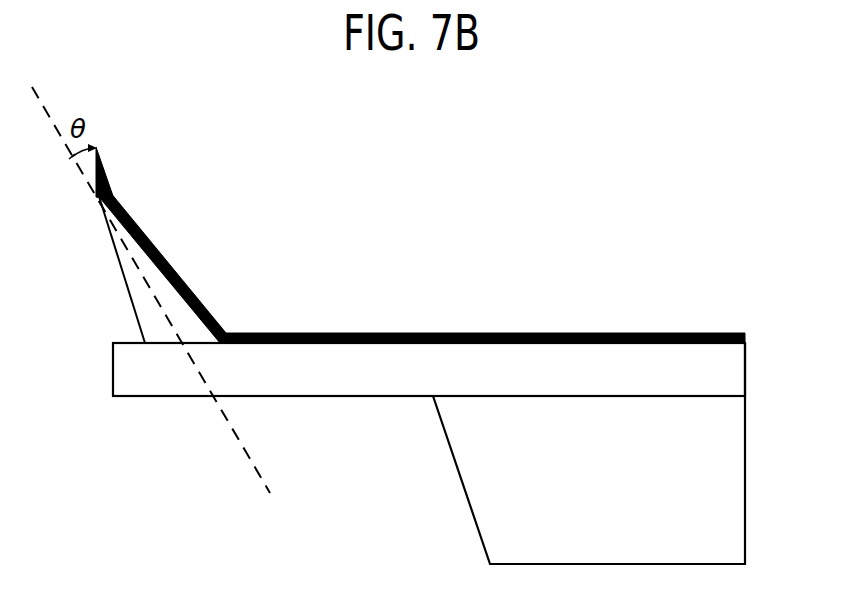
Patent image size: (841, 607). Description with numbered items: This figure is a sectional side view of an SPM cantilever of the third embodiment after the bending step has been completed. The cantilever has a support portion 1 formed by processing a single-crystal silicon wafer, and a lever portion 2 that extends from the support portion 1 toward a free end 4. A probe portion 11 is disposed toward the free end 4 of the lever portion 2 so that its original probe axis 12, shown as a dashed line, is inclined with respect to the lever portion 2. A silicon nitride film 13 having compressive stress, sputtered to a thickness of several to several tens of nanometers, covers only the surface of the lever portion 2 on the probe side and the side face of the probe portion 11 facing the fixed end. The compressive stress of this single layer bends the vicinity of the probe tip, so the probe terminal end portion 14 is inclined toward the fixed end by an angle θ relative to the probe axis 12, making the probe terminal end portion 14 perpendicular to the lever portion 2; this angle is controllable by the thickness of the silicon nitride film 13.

The support portion 1 is at (723, 485).
The lever portion 2 is at (333, 355).
The free end 4 is at (122, 372).
The probe portion 11 is at (127, 282).
The probe axis 12 is at (43, 104).
The silicon nitride film 13 is at (200, 295).
The probe terminal end portion 14 is at (108, 185).